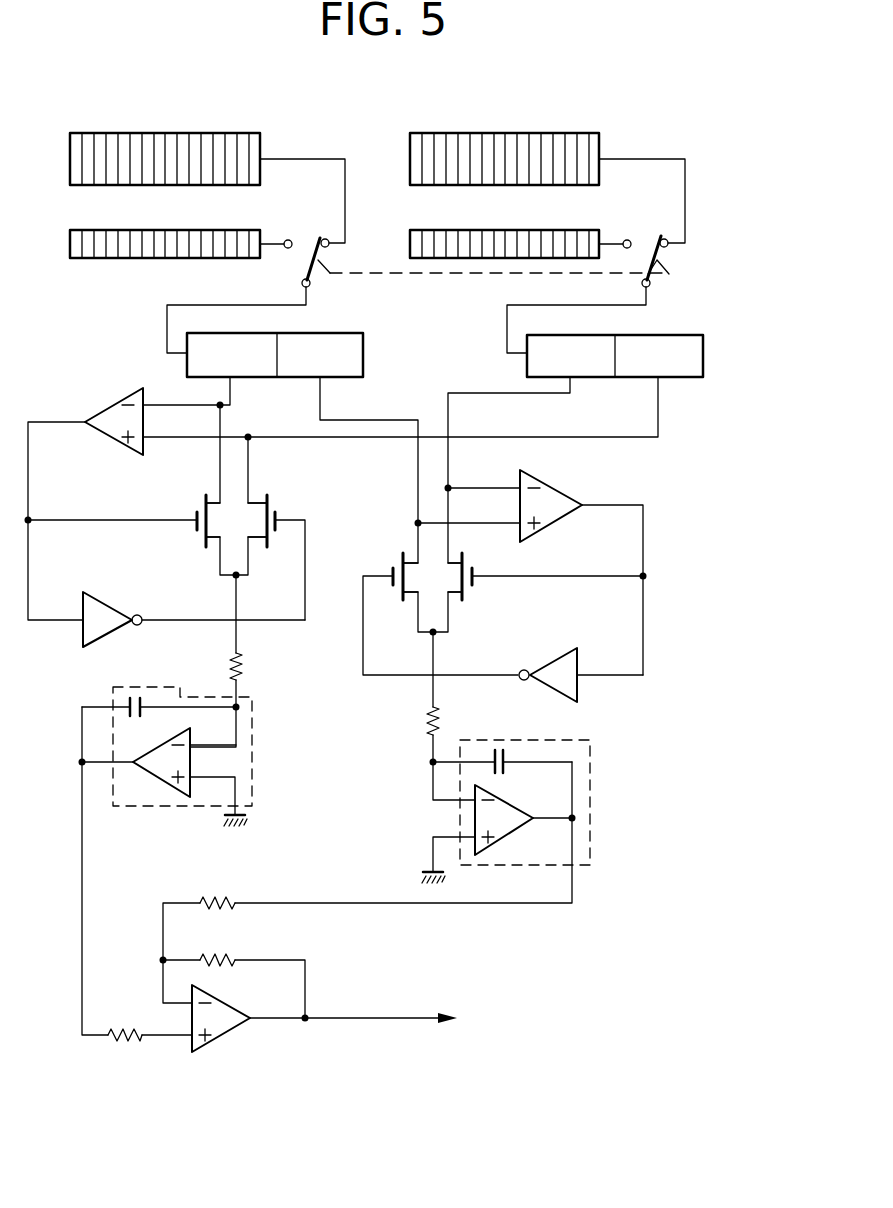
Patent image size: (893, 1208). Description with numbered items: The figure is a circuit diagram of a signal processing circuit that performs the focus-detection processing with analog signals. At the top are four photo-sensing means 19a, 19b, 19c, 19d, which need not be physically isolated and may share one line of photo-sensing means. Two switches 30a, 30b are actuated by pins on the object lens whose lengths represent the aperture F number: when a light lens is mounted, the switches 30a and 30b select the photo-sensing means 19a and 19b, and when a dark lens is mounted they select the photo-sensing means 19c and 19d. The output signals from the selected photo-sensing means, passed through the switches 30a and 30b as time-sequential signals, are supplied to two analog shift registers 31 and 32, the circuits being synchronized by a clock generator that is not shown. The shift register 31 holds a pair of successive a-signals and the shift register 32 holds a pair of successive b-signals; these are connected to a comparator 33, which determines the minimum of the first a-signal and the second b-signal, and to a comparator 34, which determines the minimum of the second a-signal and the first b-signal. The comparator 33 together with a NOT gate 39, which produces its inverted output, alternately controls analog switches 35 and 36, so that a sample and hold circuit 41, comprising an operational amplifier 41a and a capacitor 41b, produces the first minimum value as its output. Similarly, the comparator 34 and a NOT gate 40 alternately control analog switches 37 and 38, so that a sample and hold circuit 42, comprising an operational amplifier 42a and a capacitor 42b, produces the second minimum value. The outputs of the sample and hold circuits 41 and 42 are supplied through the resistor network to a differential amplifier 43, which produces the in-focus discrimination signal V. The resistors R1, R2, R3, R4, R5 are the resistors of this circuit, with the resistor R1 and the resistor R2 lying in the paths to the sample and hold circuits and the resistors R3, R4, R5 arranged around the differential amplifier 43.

The photo-sensing means 19a is at (170, 133).
The photo-sensing means 19b is at (503, 133).
The photo-sensing means 19c is at (170, 230).
The photo-sensing means 19d is at (508, 230).
The switch 30a is at (305, 260).
The switch 30b is at (641, 258).
The analog shift register 31 is at (363, 355).
The analog shift register 32 is at (703, 355).
The comparator 33 is at (110, 405).
The comparator 34 is at (558, 493).
The analog switch 35 is at (197, 506).
The analog switch 36 is at (275, 502).
The analog switch 37 is at (394, 565).
The analog switch 38 is at (464, 600).
The NOT gate 39 is at (120, 607).
The NOT gate 40 is at (546, 660).
The sample and hold circuit 41 is at (201, 762).
The operational amplifier 41a is at (156, 783).
The capacitor 41b is at (135, 718).
The sample and hold circuit 42 is at (540, 818).
The operational amplifier 42a is at (510, 842).
The capacitor 42b is at (500, 775).
The differential amplifier 43 is at (225, 1040).
The resistor R1 is at (243, 670).
The resistor R2 is at (440, 723).
The resistor R3 is at (213, 900).
The resistor R4 is at (230, 956).
The resistor R5 is at (128, 1040).